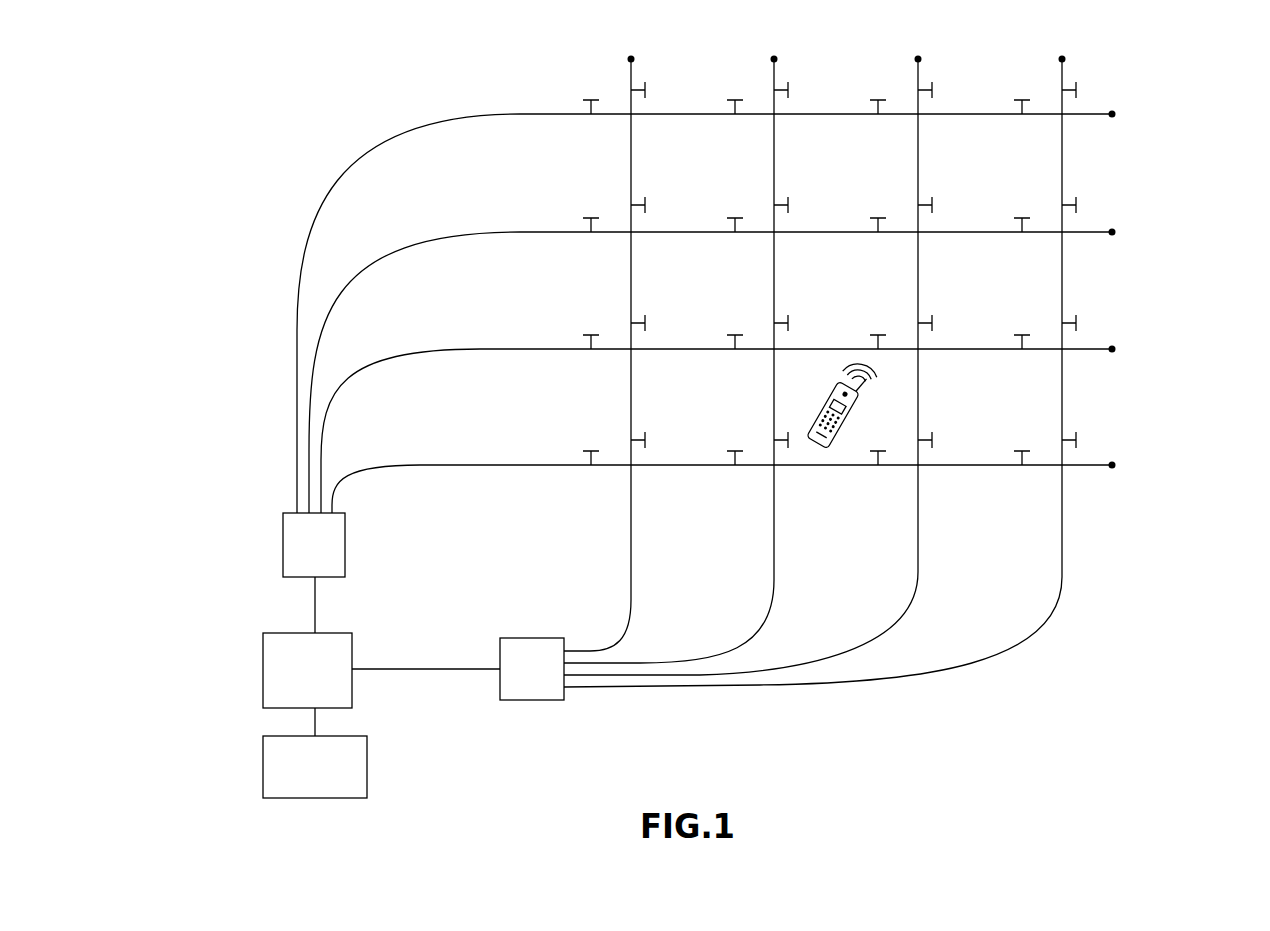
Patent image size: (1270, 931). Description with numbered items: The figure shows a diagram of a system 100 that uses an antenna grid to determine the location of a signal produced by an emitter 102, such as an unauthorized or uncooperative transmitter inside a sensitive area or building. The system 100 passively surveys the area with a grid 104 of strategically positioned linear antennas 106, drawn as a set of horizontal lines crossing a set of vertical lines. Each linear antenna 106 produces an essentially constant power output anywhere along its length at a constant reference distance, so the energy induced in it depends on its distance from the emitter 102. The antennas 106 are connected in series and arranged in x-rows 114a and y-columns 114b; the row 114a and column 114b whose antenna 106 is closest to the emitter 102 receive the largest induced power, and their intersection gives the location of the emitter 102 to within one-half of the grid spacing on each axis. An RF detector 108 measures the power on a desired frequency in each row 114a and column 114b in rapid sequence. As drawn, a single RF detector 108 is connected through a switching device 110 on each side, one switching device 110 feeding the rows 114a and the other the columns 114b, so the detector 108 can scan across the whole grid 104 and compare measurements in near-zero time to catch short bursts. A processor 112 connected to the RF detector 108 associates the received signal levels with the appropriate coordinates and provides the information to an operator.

The system 100 is at (208, 669).
The emitter 102 is at (864, 418).
The grid 104 is at (826, 328).
The linear antenna 106 is at (735, 218).
The RF detector 108 is at (352, 645).
The switching device 110 is at (283, 545).
The processor 112 is at (263, 768).
The x-row 114a is at (1113, 114).
The y-column 114b is at (630, 59).